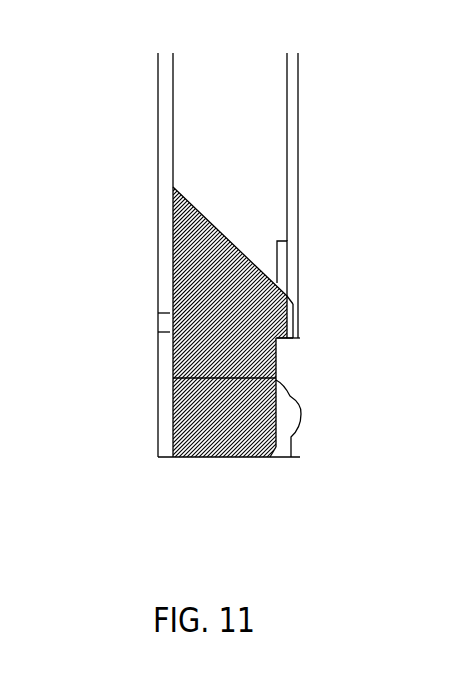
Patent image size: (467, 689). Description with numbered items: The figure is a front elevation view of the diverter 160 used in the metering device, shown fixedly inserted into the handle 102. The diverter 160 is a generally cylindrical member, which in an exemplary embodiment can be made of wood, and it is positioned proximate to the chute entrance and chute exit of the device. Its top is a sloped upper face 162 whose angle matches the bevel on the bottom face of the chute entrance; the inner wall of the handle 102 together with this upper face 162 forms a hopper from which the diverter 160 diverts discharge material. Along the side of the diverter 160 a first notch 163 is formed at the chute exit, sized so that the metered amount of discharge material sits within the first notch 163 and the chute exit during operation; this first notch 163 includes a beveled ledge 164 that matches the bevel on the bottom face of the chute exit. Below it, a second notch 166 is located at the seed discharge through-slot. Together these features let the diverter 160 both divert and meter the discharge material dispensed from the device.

The handle 102 is at (298, 113).
The diverter 160 is at (173, 268).
The sloped upper face 162 is at (248, 252).
The first notch 163 is at (280, 355).
The beveled ledge 164 is at (288, 397).
The second notch 166 is at (287, 445).